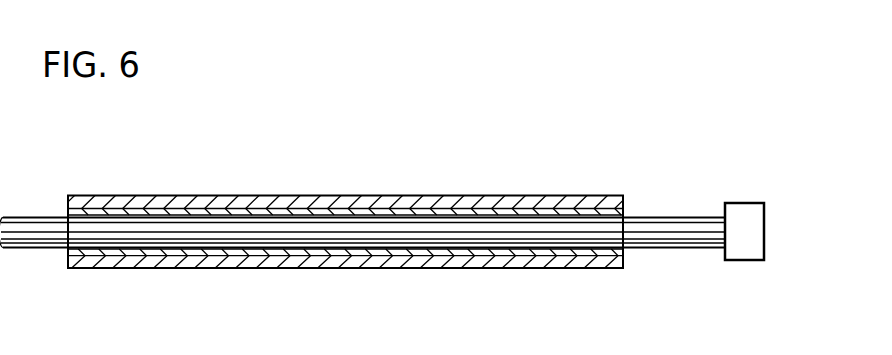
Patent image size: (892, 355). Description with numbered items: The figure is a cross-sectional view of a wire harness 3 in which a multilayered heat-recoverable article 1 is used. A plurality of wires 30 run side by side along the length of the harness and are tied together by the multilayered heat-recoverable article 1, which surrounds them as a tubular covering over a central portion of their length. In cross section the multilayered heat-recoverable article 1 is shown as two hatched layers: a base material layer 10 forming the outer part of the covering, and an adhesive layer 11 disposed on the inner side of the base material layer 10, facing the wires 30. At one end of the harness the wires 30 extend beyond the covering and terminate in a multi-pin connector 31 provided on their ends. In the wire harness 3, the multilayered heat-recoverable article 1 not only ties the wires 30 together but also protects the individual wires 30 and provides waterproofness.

The multilayered heat-recoverable article 1 is at (345, 197).
The wire harness 3 is at (382, 217).
The base material layer 10 is at (305, 198).
The adhesive layer 11 is at (223, 198).
The wire 30 is at (313, 243).
The multi-pin connector 31 is at (742, 215).